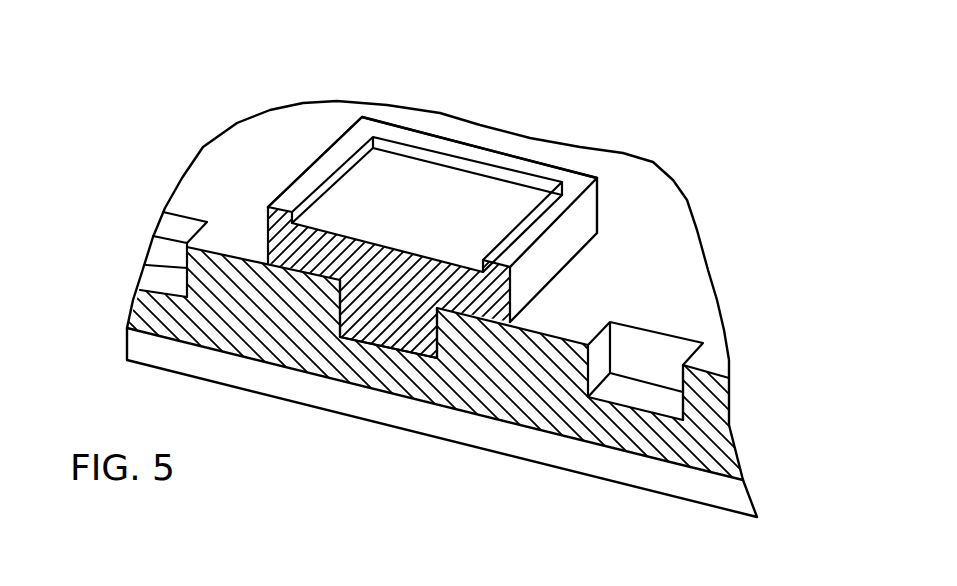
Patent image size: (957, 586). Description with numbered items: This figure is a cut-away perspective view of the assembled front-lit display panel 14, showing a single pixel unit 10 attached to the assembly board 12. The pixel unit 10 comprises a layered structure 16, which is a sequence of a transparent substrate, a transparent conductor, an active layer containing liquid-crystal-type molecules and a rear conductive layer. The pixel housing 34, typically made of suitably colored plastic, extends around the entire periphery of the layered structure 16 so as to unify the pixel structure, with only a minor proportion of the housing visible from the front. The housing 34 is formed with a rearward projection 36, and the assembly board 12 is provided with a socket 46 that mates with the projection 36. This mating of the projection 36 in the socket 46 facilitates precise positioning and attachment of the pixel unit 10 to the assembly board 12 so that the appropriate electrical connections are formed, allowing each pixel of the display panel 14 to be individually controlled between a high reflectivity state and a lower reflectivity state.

The pixel unit 10 is at (317, 160).
The assembly board 12 is at (605, 460).
The front-lit display panel 14 is at (749, 158).
The layered structure 16 is at (390, 247).
The pixel housing 34 is at (597, 178).
The rearward projection 36 is at (403, 300).
The socket 46 is at (352, 352).